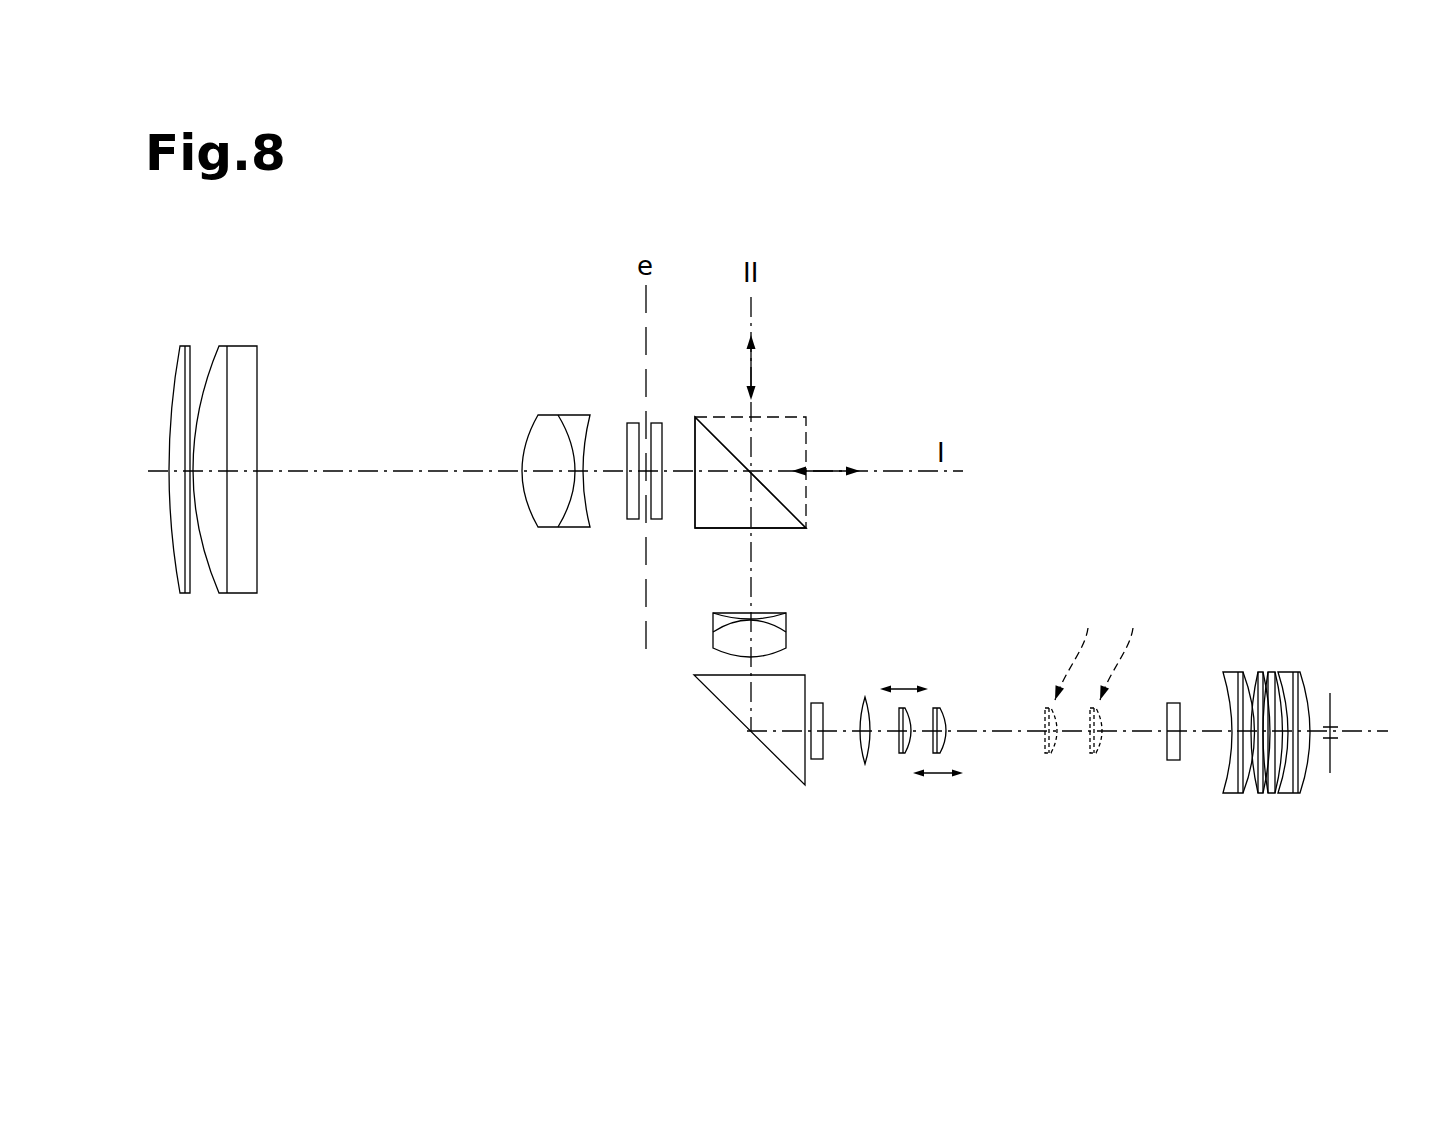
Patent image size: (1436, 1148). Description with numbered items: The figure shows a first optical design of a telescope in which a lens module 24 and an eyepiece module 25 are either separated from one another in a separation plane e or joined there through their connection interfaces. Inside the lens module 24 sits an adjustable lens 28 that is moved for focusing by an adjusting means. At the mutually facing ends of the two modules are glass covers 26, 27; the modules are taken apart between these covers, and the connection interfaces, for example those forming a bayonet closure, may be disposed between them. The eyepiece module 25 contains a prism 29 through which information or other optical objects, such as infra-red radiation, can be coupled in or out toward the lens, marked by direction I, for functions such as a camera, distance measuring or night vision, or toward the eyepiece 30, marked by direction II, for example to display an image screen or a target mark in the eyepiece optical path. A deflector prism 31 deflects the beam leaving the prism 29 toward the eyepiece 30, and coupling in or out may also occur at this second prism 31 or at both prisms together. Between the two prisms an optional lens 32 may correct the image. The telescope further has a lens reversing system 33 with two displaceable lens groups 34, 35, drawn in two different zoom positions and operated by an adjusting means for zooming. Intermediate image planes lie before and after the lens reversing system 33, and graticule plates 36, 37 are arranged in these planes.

The lens module 24 is at (398, 315).
The eyepiece module 25 is at (875, 390).
The glass cover 26 is at (630, 520).
The glass cover 27 is at (655, 420).
The adjustable lens 28 is at (537, 505).
The prism 29 is at (773, 523).
The eyepiece 30 is at (1318, 660).
The deflector prism 31 is at (720, 690).
The lens 32 is at (777, 640).
The lens reversing system 33 is at (1007, 706).
The displaceable lens group 34 is at (950, 693).
The displaceable lens group 35 is at (912, 682).
The graticule plate 36 is at (817, 758).
The graticule plate 37 is at (1173, 760).